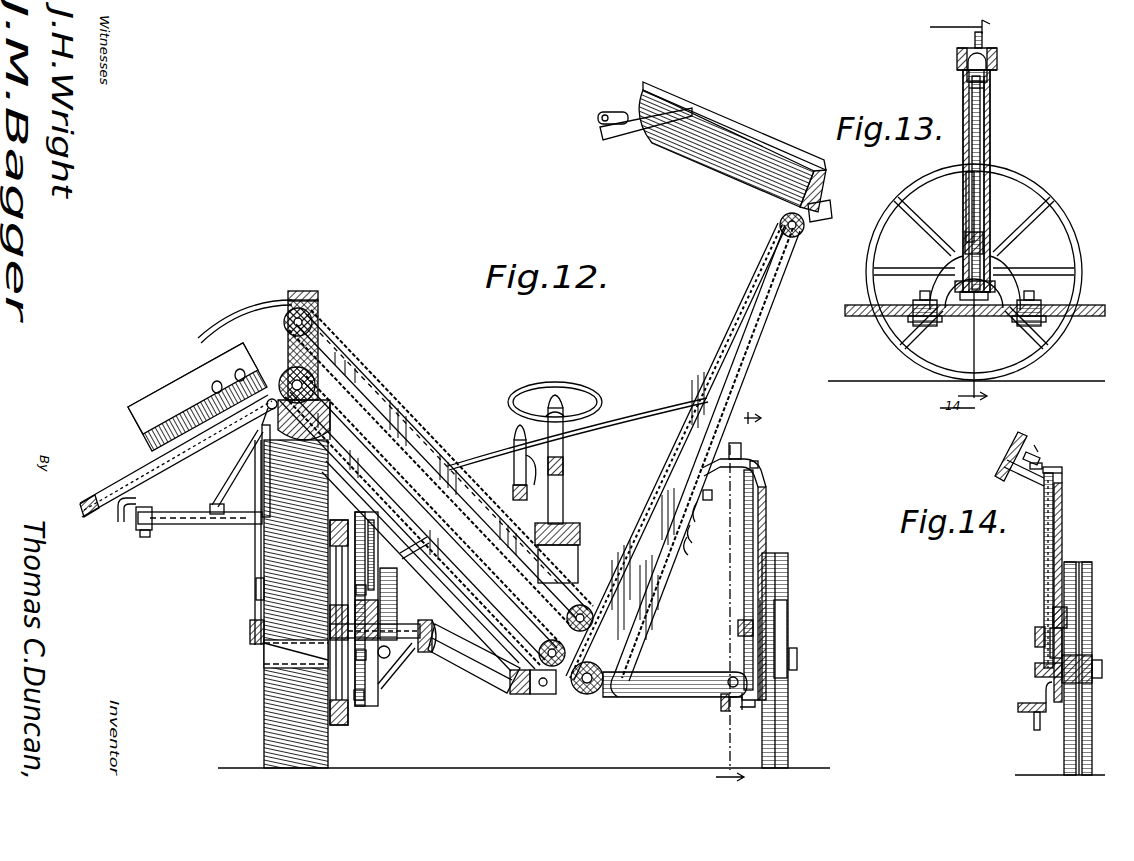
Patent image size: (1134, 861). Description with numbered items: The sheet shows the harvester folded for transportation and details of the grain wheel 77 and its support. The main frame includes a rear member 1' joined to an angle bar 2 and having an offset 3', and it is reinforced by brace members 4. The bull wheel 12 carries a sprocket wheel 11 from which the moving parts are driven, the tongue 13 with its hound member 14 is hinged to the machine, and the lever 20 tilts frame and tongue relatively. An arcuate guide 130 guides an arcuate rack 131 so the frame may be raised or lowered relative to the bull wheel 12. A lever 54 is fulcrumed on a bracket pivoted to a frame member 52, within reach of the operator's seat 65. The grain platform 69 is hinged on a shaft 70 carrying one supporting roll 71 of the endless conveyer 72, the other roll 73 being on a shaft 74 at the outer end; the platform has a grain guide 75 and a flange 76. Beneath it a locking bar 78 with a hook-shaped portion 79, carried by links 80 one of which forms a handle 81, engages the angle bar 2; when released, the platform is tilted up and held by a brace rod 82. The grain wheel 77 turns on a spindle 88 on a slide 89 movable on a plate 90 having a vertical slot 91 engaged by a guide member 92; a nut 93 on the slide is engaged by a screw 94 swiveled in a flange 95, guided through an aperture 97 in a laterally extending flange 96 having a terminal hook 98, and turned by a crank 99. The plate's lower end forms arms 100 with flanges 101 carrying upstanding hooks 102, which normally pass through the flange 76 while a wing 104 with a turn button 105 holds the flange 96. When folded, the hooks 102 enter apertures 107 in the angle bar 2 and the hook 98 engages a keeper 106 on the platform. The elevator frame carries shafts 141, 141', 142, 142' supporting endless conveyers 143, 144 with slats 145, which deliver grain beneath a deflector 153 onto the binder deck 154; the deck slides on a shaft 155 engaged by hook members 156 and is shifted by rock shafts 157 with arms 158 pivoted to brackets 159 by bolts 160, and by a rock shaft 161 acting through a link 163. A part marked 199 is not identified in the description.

In FIG. 12, the rear frame member 1' is at (675, 699).
In FIG. 12, the angle bar 2 is at (714, 703).
In FIG. 13, the angle bar 2 is at (1088, 318).
In FIG. 14, the angle bar 2 is at (1017, 710).
In FIG. 12, the offset 3' is at (474, 666).
In FIG. 12, the brace members 4 is at (453, 632).
In FIG. 12, the sprocket wheel 11 is at (346, 703).
In FIG. 12, the bull wheel 12 is at (264, 603).
In FIG. 12, the tongue 13 is at (763, 411).
In FIG. 13, the hound member 14 is at (960, 215).
In FIG. 12, the lever 20 is at (511, 463).
In FIG. 12, the frame member 52 is at (580, 531).
In FIG. 12, the lever 54 is at (568, 460).
In FIG. 12, the seat 65 is at (533, 392).
In FIG. 12, the grain platform 69 is at (763, 357).
In FIG. 14, the grain platform 69 is at (1021, 440).
In FIG. 12, the shaft 70 is at (589, 695).
In FIG. 12, the supporting roll 71 is at (577, 695).
In FIG. 12, the endless conveyer 72 is at (663, 474).
In FIG. 12, the supporting roll 73 is at (784, 220).
In FIG. 12, the shaft 74 is at (806, 232).
In FIG. 12, the grain guide 75 is at (745, 130).
In FIG. 12, the flange 76 is at (822, 205).
In FIG. 12, the grain wheel 77 is at (789, 584).
In FIG. 13, the grain wheel 77 is at (1076, 224).
In FIG. 14, the grain wheel 77 is at (1088, 594).
In FIG. 12, the locking bar 78 is at (695, 530).
In FIG. 12, the hook-shaped portion 79 is at (688, 546).
In FIG. 12, the links 80 is at (698, 505).
In FIG. 12, the arm or handle 81 is at (707, 494).
In FIG. 12, the brace rod 82 is at (623, 420).
In FIG. 14, the spindle 88 is at (1090, 660).
In FIG. 12, the slide 89 is at (767, 622).
In FIG. 14, the slide 89 is at (1042, 626).
In FIG. 12, the plate 90 is at (764, 510).
In FIG. 13, the plate 90 is at (990, 152).
In FIG. 14, the plate 90 is at (1063, 532).
In FIG. 13, the vertical slot 91 is at (983, 184).
In FIG. 14, the vertical slot 91 is at (1045, 588).
In FIG. 13, the guide member 92 is at (984, 206).
In FIG. 14, the guide member 92 is at (1045, 608).
In FIG. 12, the nut 93 is at (738, 625).
In FIG. 14, the nut 93 is at (1037, 641).
In FIG. 12, the screw 94 is at (753, 533).
In FIG. 13, the screw 94 is at (980, 127).
In FIG. 14, the screw 94 is at (1044, 550).
In FIG. 12, the flange 95 is at (725, 672).
In FIG. 13, the flange 95 is at (994, 280).
In FIG. 14, the flange 95 is at (1037, 671).
In FIG. 12, the laterally extending flange 96 is at (760, 472).
In FIG. 13, the laterally extending flange 96 is at (986, 78).
In FIG. 14, the laterally extending flange 96 is at (1026, 478).
In FIG. 13, the aperture 97 is at (985, 88).
In FIG. 14, the aperture 97 is at (1063, 490).
In FIG. 12, the terminal hook 98 is at (741, 444).
In FIG. 13, the terminal hook 98 is at (984, 48).
In FIG. 14, the terminal hook 98 is at (1013, 462).
In FIG. 12, the crank 99 is at (758, 462).
In FIG. 14, the crank 99 is at (1042, 463).
In FIG. 13, the arms 100 is at (932, 290).
In FIG. 13, the laterally extending flange 101 is at (912, 320).
In FIG. 14, the laterally extending flange 101 is at (1038, 722).
In FIG. 12, the hook member 102 is at (731, 680).
In FIG. 13, the hook member 102 is at (920, 297).
In FIG. 14, the hook member 102 is at (1032, 702).
In FIG. 12, the wing 104 is at (622, 128).
In FIG. 12, the turn button 105 is at (610, 112).
In FIG. 12, the keeper 106 is at (735, 427).
In FIG. 13, the keeper 106 is at (997, 60).
In FIG. 14, the keeper 106 is at (1036, 452).
In FIG. 12, the apertures 107 is at (724, 717).
In FIG. 13, the apertures 107 is at (930, 326).
In FIG. 12, the arcuate guide 130 is at (377, 677).
In FIG. 12, the arcuate rack 131 is at (406, 650).
In FIG. 12, the shaft 141 is at (522, 650).
In FIG. 12, the shaft 141' is at (283, 365).
In FIG. 12, the shaft 142 is at (590, 594).
In FIG. 12, the shaft 142' is at (322, 306).
In FIG. 12, the endless conveyer 143 is at (441, 563).
In FIG. 12, the endless conveyer 144 is at (418, 414).
In FIG. 12, the crossed slats 145 is at (433, 403).
In FIG. 12, the shield or deflector 153 is at (238, 306).
In FIG. 12, the binder deck 154 is at (134, 470).
In FIG. 12, the shaft 155 is at (298, 440).
In FIG. 12, the hook members 156 is at (314, 432).
In FIG. 12, the rock shafts 157 is at (258, 584).
In FIG. 12, the radially extending arms 158 is at (198, 524).
In FIG. 12, the brackets 159 is at (117, 515).
In FIG. 12, the pins or bolts 160 is at (140, 530).
In FIG. 12, the rock shaft 161 is at (345, 448).
In FIG. 12, the link 163 is at (253, 440).
In FIG. 12, the plate 199 is at (227, 423).